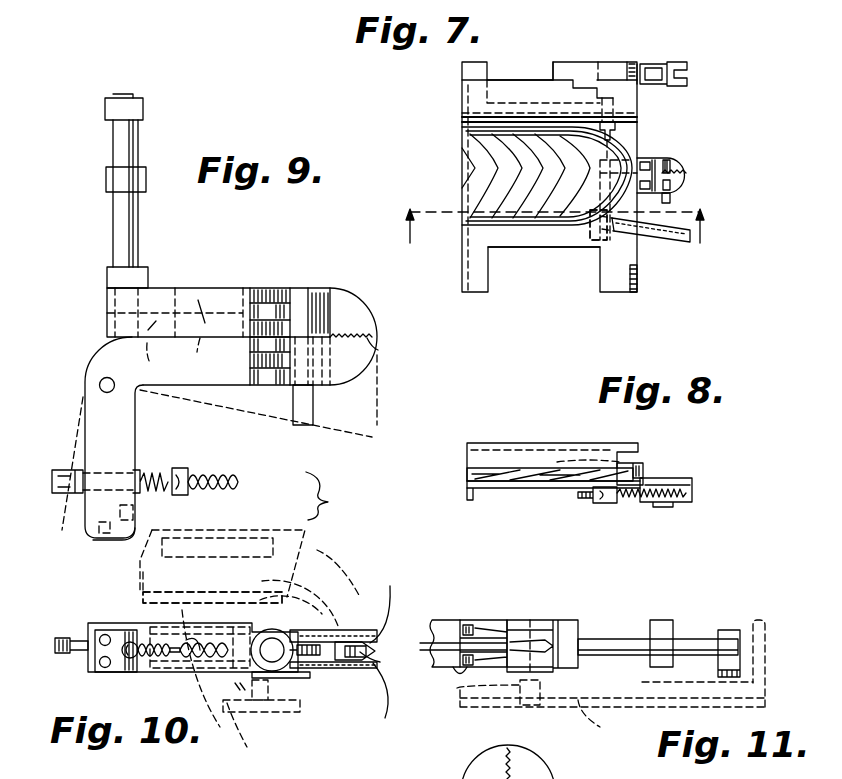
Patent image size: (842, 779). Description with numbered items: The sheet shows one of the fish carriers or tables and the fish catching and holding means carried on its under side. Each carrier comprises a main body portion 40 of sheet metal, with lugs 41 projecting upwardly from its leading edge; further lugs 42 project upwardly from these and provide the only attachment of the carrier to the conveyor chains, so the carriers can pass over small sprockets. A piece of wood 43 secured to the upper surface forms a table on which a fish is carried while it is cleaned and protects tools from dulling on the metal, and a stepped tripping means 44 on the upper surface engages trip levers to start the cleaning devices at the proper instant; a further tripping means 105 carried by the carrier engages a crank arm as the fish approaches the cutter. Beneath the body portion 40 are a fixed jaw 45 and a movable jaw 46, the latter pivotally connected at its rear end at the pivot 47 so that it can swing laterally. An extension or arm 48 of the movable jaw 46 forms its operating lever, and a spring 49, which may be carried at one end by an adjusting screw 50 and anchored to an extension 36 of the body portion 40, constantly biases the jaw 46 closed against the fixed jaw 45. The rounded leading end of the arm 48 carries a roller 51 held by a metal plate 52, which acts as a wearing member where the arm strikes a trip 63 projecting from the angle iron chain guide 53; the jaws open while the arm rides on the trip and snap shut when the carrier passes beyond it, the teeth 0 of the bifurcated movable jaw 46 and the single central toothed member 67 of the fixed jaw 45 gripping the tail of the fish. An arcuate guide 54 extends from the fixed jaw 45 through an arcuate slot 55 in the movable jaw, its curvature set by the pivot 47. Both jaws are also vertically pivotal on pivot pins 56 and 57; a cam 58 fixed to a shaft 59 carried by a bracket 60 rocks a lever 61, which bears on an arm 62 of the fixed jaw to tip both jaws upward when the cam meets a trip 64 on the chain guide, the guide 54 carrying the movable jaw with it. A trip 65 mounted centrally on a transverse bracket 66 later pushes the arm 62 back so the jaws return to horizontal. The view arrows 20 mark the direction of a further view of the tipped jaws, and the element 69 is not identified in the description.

In FIG. 9, the toothed member 0 is at (378, 340).
In FIG. 10, the toothed member 0 is at (382, 651).
In FIG. 11, the toothed member 0 is at (510, 763).
In FIG. 7, the section line 20 is at (559, 221).
In FIG. 7, the extension of the body portion 36 is at (668, 240).
In FIG. 8, the extension of the body portion 36 is at (680, 484).
In FIG. 7, the main body portion 40 is at (508, 240).
In FIG. 8, the main body portion 40 is at (540, 486).
In FIG. 7, the lug 41 is at (640, 280).
In FIG. 7, the lug 42 is at (641, 84).
In FIG. 7, the piece of wood 43 is at (475, 157).
In FIG. 8, the piece of wood 43 is at (478, 475).
In FIG. 7, the stepped tripping means 44 is at (529, 95).
In FIG. 8, the stepped tripping means 44 is at (490, 443).
In FIG. 7, the fixed jaw 45 is at (683, 163).
In FIG. 9, the fixed jaw 45 is at (302, 310).
In FIG. 10, the fixed jaw 45 is at (364, 651).
In FIG. 7, the movable jaw 46 is at (688, 182).
In FIG. 9, the movable jaw 46 is at (347, 370).
In FIG. 10, the movable jaw 46 is at (330, 637).
In FIG. 9, the pivot 47 is at (100, 385).
In FIG. 10, the pivot 47 is at (55, 645).
In FIG. 11, the pivot 47 is at (457, 677).
In FIG. 7, the extension or arm 48 is at (597, 238).
In FIG. 9, the extension or arm 48 is at (100, 427).
In FIG. 8, the spring 49 is at (648, 503).
In FIG. 9, the spring 49 is at (245, 481).
In FIG. 10, the spring 49 is at (220, 640).
In FIG. 8, the adjusting screw 50 is at (616, 504).
In FIG. 9, the adjusting screw 50 is at (162, 470).
In FIG. 10, the adjusting screw 50 is at (170, 656).
In FIG. 9, the roller 51 is at (135, 541).
In FIG. 10, the roller 51 is at (128, 642).
In FIG. 9, the metal plate 52 is at (98, 530).
In FIG. 10, the metal plate 52 is at (92, 630).
In FIG. 9, the angle iron chain guide 53 is at (143, 584).
In FIG. 10, the angle iron chain guide 53 is at (183, 585).
In FIG. 11, the angle iron chain guide 53 is at (765, 652).
In FIG. 7, the arcuately shaped guide or arm 54 is at (670, 198).
In FIG. 9, the arcuately shaped guide or arm 54 is at (313, 408).
In FIG. 10, the arcuately shaped guide or arm 54 is at (300, 645).
In FIG. 11, the arcuately shaped guide or arm 54 is at (422, 642).
In FIG. 9, the arcuately shaped slot 55 is at (335, 352).
In FIG. 10, the arcuately shaped slot 55 is at (318, 656).
In FIG. 9, the pivot pin 56 is at (270, 290).
In FIG. 9, the pivot pin 57 is at (258, 404).
In FIG. 10, the pivot pin 57 is at (272, 650).
In FIG. 9, the cam 58 is at (105, 112).
In FIG. 10, the cam 58 is at (103, 667).
In FIG. 11, the cam 58 is at (728, 632).
In FIG. 9, the shaft 59 is at (120, 240).
In FIG. 9, the bracket 60 is at (116, 180).
In FIG. 9, the lever 61 is at (166, 360).
In FIG. 10, the lever 61 is at (178, 627).
In FIG. 9, the arm 62 is at (204, 361).
In FIG. 10, the arm 62 is at (238, 668).
In FIG. 9, the trip 63 is at (205, 536).
In FIG. 11, the trip or lug 64 is at (612, 683).
In FIG. 10, the trip 65 is at (247, 747).
In FIG. 11, the trip 65 is at (597, 698).
In FIG. 10, the transverse bracket 66 is at (280, 715).
In FIG. 11, the transverse bracket 66 is at (606, 721).
In FIG. 9, the toothed member 67 is at (357, 303).
In FIG. 10, the toothed member 67 is at (368, 652).
In FIG. 11, the toothed member 67 is at (513, 770).
In FIG. 11, the shaft 69 is at (680, 640).
In FIG. 7, the tripping means 105 is at (583, 72).